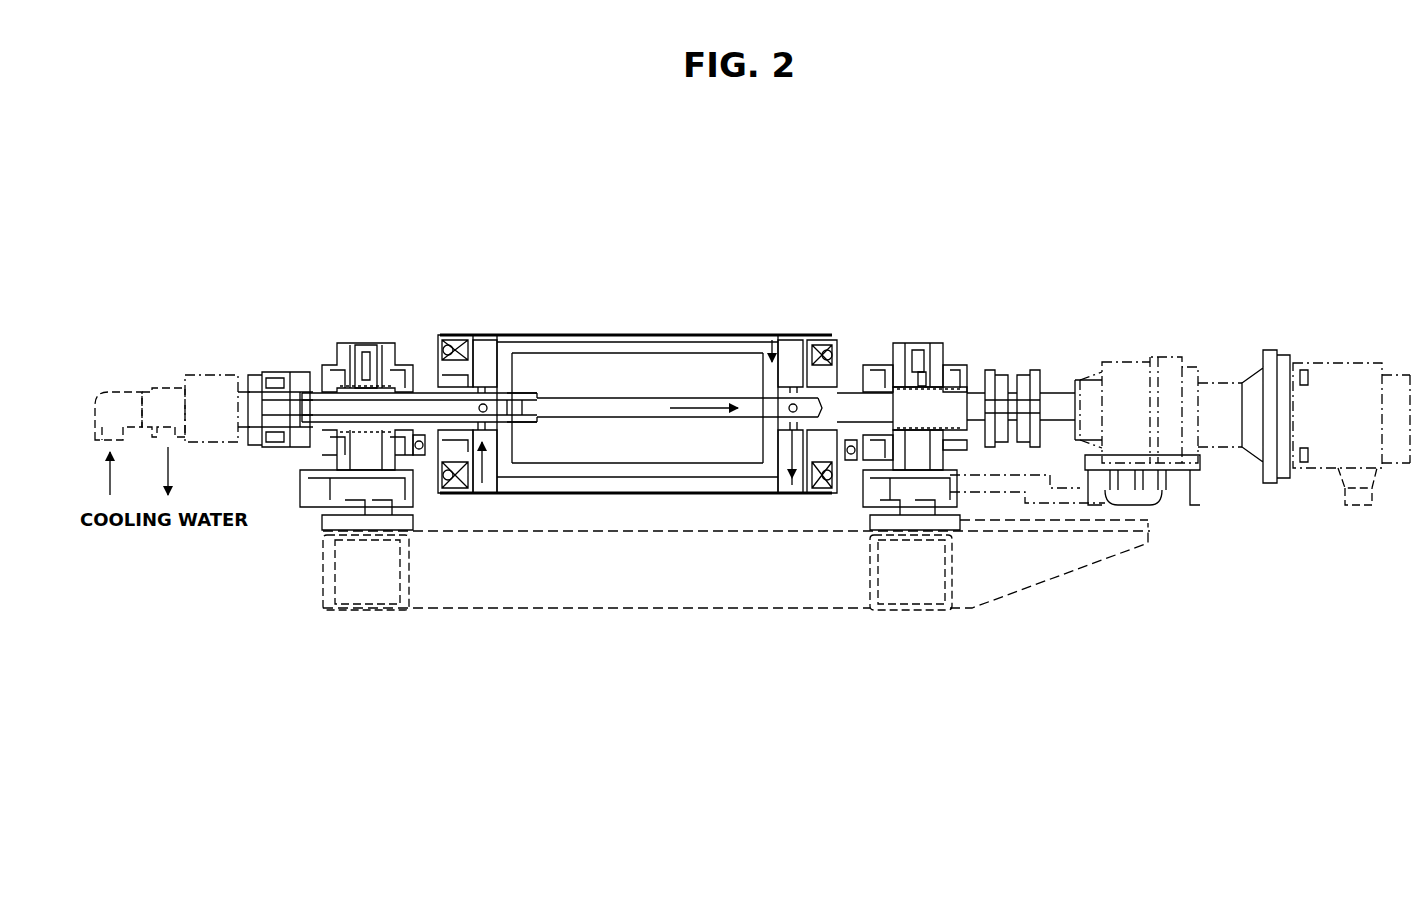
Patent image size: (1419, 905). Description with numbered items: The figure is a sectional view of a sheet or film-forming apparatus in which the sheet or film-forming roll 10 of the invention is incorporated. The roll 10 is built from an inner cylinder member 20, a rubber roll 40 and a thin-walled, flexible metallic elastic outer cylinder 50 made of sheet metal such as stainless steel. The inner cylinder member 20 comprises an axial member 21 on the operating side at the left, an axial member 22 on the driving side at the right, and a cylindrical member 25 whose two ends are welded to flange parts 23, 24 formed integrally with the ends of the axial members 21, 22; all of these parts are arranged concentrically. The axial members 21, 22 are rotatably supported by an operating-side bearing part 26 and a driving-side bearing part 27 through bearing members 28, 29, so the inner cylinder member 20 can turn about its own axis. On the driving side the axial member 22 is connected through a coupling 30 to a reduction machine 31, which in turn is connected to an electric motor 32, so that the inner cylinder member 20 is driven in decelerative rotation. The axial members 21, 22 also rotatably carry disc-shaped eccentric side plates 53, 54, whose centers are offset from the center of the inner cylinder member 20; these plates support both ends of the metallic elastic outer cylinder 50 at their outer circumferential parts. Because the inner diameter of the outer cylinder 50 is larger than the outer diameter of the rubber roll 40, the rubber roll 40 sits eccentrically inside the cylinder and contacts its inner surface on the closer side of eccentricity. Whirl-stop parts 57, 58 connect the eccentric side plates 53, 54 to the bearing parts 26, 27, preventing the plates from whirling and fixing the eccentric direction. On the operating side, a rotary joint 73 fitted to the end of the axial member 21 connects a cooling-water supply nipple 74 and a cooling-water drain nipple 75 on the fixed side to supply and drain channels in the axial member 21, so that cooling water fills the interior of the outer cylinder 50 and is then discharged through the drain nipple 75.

The sheet or film-forming roll 10 is at (649, 359).
The inner cylinder member 20 is at (775, 346).
The axial member 21 is at (418, 393).
The axial member 22 is at (863, 398).
The flange part 23 is at (508, 352).
The flange part 24 is at (792, 480).
The cylindrical member 25 is at (680, 354).
The operating-side bearing part 26 is at (345, 340).
The driving-side bearing part 27 is at (915, 365).
The bearing member 28 is at (370, 344).
The bearing member 29 is at (905, 385).
The coupling 30 is at (1005, 372).
The reduction machine 31 is at (1128, 372).
The electric motor 32 is at (1330, 378).
The rubber roll 40 is at (716, 343).
The metallic elastic outer cylinder 50 is at (740, 338).
The eccentric side plate 53 is at (455, 345).
The eccentric side plate 54 is at (822, 345).
The whirl-stop part 57 is at (420, 470).
The whirl-stop part 58 is at (858, 478).
The rotary joint 73 is at (228, 390).
The cooling-water supply nipple 74 is at (120, 392).
The cooling-water drain nipple 75 is at (170, 390).